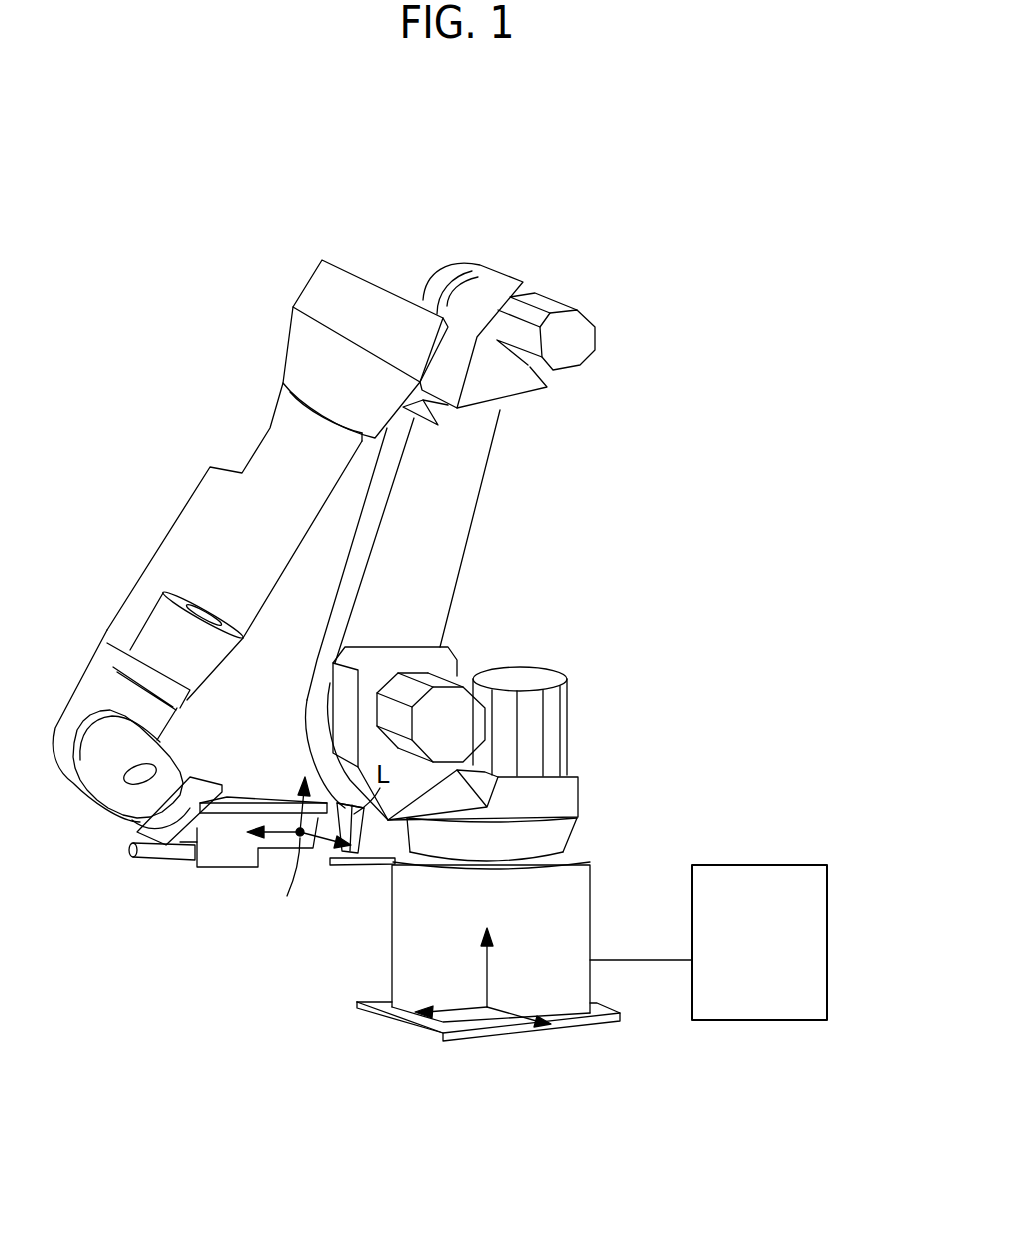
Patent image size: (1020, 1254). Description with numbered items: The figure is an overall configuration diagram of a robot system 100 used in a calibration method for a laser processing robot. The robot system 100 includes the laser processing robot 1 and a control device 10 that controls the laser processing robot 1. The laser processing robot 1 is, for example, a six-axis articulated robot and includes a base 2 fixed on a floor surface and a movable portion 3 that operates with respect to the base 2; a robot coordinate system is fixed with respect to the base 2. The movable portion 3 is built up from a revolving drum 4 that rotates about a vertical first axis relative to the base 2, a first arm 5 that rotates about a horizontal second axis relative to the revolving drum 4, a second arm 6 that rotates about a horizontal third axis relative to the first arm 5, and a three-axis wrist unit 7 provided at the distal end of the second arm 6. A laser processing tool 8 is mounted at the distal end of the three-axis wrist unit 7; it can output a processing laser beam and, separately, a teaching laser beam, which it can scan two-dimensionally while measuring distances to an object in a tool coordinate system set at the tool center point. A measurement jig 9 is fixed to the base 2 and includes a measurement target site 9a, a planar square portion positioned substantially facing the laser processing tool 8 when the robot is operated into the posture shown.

The robot system 100 is at (717, 190).
The laser processing robot 1 is at (593, 274).
The base 2 is at (610, 1021).
The movable portion 3 is at (517, 629).
The revolving drum 4 is at (580, 833).
The first arm 5 is at (457, 495).
The second arm 6 is at (193, 520).
The three-axis wrist unit 7 is at (131, 825).
The laser processing tool 8 is at (218, 854).
The measurement jig 9 is at (349, 870).
The measurement target site 9a is at (334, 800).
The control device 10 is at (775, 866).